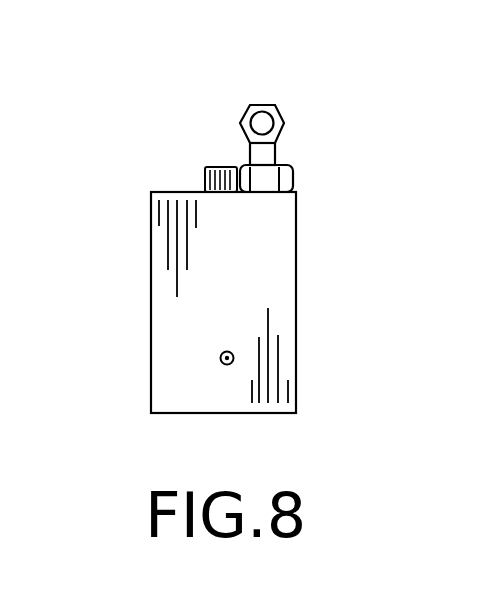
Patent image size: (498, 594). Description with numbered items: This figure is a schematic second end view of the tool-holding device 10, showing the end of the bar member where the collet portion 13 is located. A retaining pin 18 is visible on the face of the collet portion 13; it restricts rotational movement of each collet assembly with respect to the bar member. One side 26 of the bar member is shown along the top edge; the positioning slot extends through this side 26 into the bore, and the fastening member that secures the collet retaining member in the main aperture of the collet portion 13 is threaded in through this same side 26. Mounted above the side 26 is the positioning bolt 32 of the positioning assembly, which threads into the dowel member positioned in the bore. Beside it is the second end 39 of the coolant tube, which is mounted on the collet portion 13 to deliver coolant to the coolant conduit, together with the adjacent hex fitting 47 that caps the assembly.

The pressure unit assembly 10 is at (146, 92).
The collet portion 13 is at (235, 272).
The retaining pin 18 is at (237, 362).
The side 26 is at (172, 192).
The positioning bolt 32 is at (217, 167).
The second end 39 is at (243, 165).
The hex connector 47 is at (281, 163).